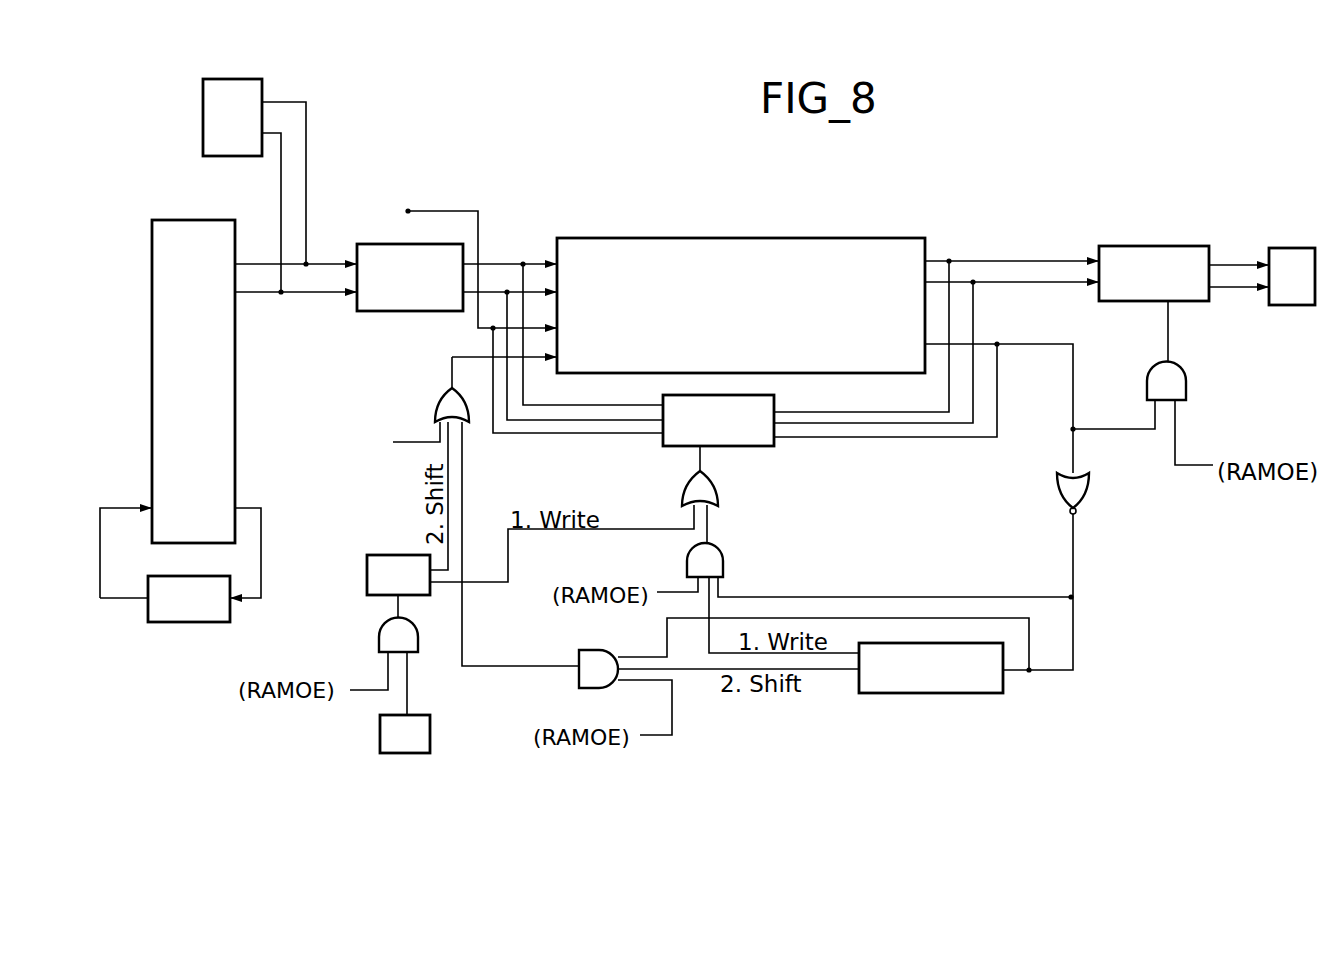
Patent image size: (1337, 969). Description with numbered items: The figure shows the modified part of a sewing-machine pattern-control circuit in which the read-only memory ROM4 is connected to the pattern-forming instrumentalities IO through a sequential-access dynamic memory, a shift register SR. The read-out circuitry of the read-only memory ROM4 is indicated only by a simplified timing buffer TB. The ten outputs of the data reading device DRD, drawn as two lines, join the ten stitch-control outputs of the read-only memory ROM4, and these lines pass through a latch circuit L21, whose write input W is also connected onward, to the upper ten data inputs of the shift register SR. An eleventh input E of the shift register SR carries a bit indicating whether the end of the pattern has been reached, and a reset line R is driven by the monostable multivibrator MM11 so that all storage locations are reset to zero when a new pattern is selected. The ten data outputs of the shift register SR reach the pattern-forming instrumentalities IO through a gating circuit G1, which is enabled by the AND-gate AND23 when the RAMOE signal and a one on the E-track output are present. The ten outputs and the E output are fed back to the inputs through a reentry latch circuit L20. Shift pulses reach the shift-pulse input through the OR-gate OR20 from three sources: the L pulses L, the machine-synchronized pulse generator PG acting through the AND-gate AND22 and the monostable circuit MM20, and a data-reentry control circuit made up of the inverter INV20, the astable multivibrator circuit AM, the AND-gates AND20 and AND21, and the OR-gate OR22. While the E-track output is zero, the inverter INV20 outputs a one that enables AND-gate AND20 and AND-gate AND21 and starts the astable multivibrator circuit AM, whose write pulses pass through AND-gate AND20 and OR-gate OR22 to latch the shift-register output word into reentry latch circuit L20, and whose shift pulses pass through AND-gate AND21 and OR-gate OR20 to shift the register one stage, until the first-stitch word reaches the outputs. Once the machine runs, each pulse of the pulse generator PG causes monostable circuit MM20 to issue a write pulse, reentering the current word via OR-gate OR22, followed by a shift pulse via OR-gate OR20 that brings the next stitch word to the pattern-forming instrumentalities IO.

The data reading device DRD is at (203, 122).
The read-only memory ROM4 is at (193, 381).
The timing buffer TB is at (174, 617).
The latch circuit L21 is at (368, 311).
The write pulse input W is at (408, 244).
The monostable multivibrator MM11 is at (613, 238).
The shift register SR is at (778, 238).
The reentry latch circuit L20 is at (780, 398).
The gating circuit G1 is at (1142, 244).
The pattern-forming instrumentalities IO is at (1292, 258).
The AND-gate AND23 is at (1203, 372).
The inverter INV20 is at (1104, 501).
The OR-gate OR20 is at (421, 398).
The L pulses L is at (377, 444).
The monostable circuit MM20 is at (368, 560).
The AND-gate AND22 is at (355, 633).
The machine-synchronized pulse generator PG is at (380, 738).
The OR-gate OR22 is at (732, 488).
The AND-gate AND20 is at (745, 552).
The AND-gate AND21 is at (602, 656).
The astable multivibrator circuit AM is at (936, 694).